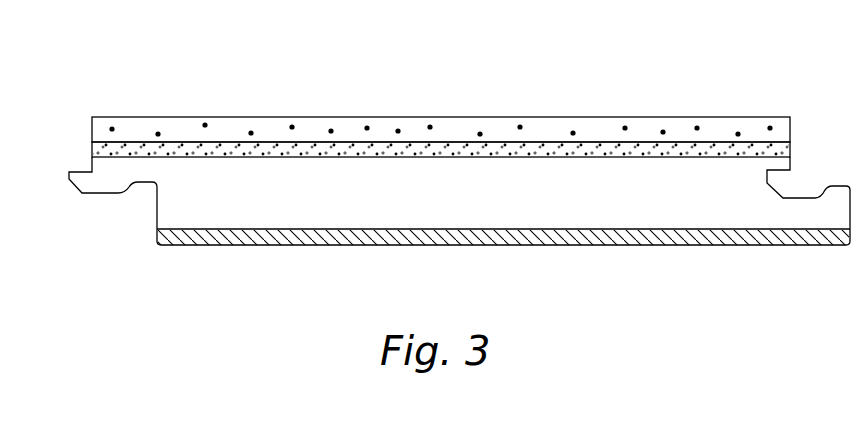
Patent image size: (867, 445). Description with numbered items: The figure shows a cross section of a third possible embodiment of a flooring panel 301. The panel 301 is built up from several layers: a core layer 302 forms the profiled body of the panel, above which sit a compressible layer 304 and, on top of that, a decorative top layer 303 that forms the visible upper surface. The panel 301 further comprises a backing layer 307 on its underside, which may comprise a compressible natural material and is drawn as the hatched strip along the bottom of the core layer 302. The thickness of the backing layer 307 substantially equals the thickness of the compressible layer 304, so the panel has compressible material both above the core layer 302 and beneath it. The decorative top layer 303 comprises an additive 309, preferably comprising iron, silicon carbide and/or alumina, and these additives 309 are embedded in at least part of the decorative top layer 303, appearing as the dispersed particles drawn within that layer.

The flooring panel 301 is at (88, 84).
The core layer 302 is at (488, 195).
The decorative top layer 303 is at (236, 130).
The compressible layer 304 is at (445, 155).
The backing layer 307 is at (657, 240).
The additive 309 is at (333, 130).